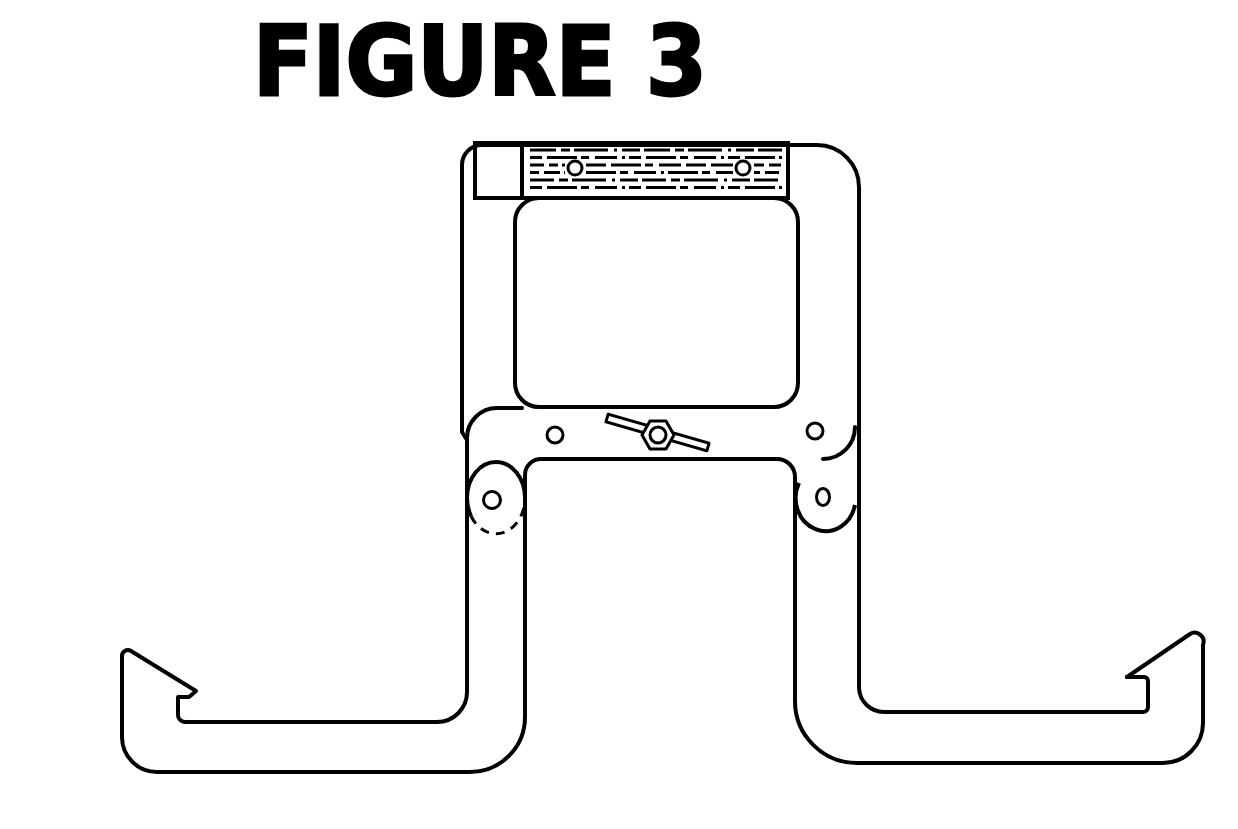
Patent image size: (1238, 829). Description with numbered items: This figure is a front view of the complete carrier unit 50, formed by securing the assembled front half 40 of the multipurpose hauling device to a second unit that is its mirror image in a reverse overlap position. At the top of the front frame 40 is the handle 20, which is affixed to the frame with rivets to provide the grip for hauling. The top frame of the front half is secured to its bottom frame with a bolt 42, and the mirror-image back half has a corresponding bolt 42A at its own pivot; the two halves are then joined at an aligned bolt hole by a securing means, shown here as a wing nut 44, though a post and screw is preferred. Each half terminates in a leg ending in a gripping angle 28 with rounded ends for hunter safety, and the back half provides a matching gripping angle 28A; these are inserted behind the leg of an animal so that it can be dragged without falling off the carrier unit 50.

The handle 20 is at (679, 184).
The gripping angle 28 is at (158, 684).
The hook end of right arm 28A is at (1127, 679).
The assembled front half of the multipurpose hauling device 40 is at (841, 265).
The bolt 42 is at (515, 510).
The right pivot pin 42A is at (831, 495).
The wing nut 44 is at (697, 458).
The carrier unit 50 is at (663, 457).